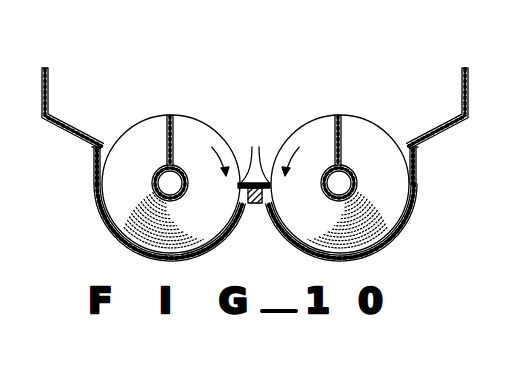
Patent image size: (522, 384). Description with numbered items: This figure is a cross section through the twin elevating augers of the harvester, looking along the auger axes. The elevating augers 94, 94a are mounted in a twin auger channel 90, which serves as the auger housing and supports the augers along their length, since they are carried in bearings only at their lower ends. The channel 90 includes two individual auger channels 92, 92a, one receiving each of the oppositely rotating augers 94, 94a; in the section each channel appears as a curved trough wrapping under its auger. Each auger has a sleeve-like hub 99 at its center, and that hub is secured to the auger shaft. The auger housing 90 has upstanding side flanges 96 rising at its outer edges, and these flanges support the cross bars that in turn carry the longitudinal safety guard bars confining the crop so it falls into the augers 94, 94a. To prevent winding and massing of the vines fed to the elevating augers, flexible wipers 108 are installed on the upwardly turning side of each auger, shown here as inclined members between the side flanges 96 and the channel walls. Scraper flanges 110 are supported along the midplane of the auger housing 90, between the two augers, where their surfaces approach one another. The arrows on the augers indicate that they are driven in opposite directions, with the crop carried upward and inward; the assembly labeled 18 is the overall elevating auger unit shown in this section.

The feed assembly 18 is at (258, 104).
The twin auger channel 90 is at (90, 171).
The individual auger channel 92 is at (137, 252).
The individual auger channel 92a is at (364, 255).
The auger 94 is at (150, 115).
The auger 94a is at (358, 116).
The upstanding side flange 96 is at (44, 68).
The sleeve-like hub 99 is at (153, 179).
The flexible wiper 108 is at (67, 128).
The scraper flange 110 is at (253, 155).